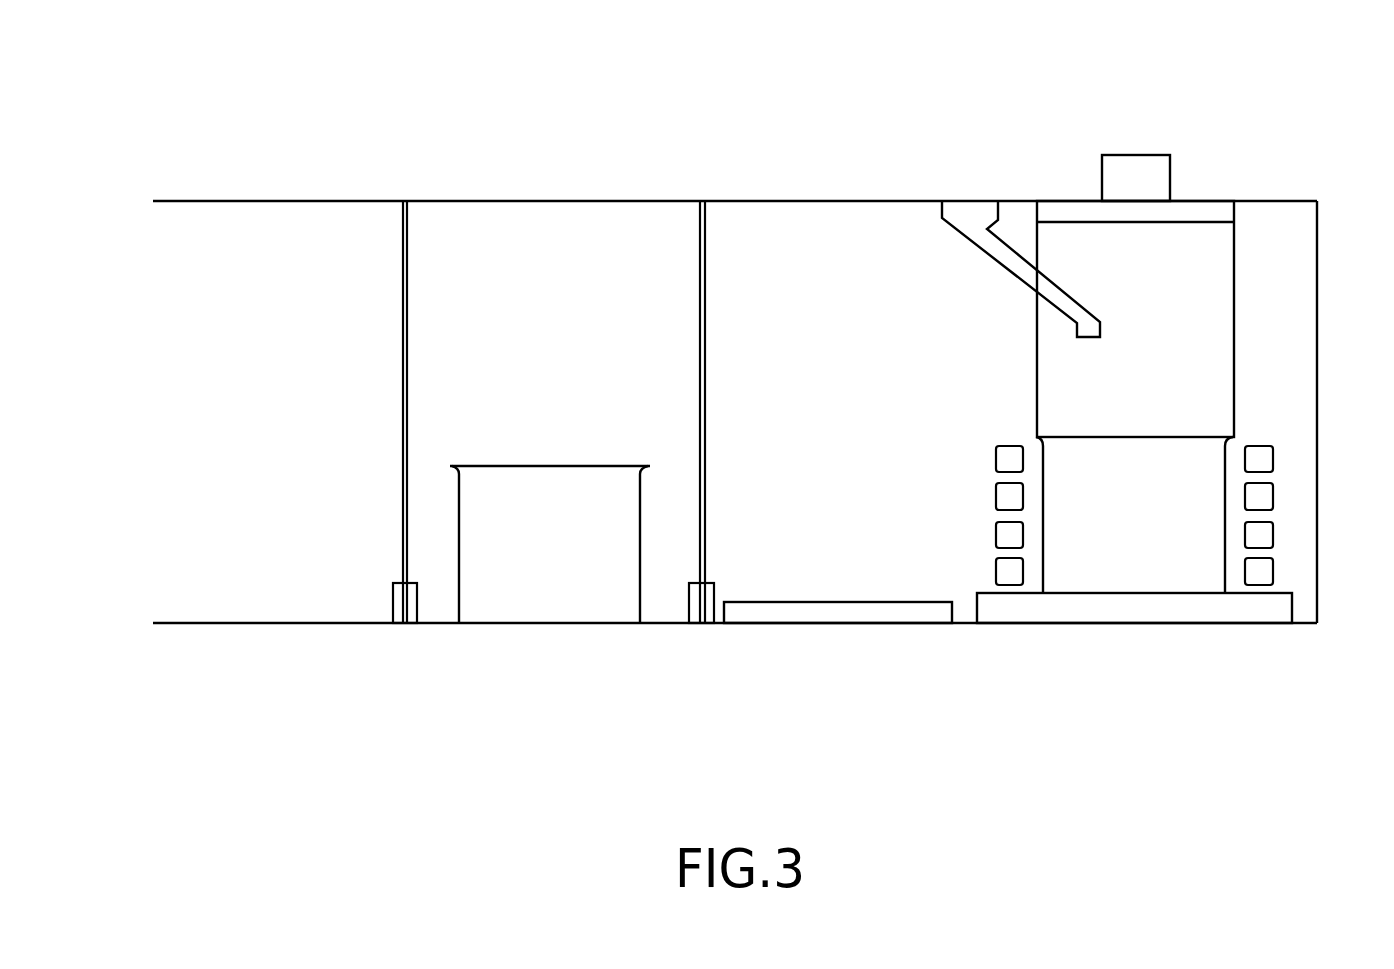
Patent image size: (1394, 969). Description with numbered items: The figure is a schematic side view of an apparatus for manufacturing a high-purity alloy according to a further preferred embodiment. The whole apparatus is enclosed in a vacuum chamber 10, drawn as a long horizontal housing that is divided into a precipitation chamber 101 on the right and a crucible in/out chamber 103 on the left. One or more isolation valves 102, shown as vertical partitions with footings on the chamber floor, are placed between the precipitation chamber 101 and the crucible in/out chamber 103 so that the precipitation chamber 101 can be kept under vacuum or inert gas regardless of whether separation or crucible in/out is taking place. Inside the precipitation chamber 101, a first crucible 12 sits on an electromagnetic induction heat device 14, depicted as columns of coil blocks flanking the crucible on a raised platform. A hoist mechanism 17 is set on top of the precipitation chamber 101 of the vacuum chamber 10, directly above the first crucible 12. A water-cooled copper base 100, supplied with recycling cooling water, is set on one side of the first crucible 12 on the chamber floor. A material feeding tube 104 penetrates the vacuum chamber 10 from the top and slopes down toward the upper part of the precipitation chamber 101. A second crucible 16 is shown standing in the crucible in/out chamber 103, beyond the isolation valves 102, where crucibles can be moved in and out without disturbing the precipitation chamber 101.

The vacuum chamber 10 is at (907, 152).
The first crucible 12 is at (1122, 575).
The electromagnetic induction heat device 14 is at (1260, 447).
The second crucible 16 is at (512, 523).
The hoist mechanism 17 is at (1193, 212).
The water-cooled copper base 100 is at (778, 613).
The precipitation chamber 101 is at (828, 222).
The isolation valves 102 is at (398, 223).
The crucible in/out chamber 103 is at (518, 225).
The material feeding tube 104 is at (943, 220).